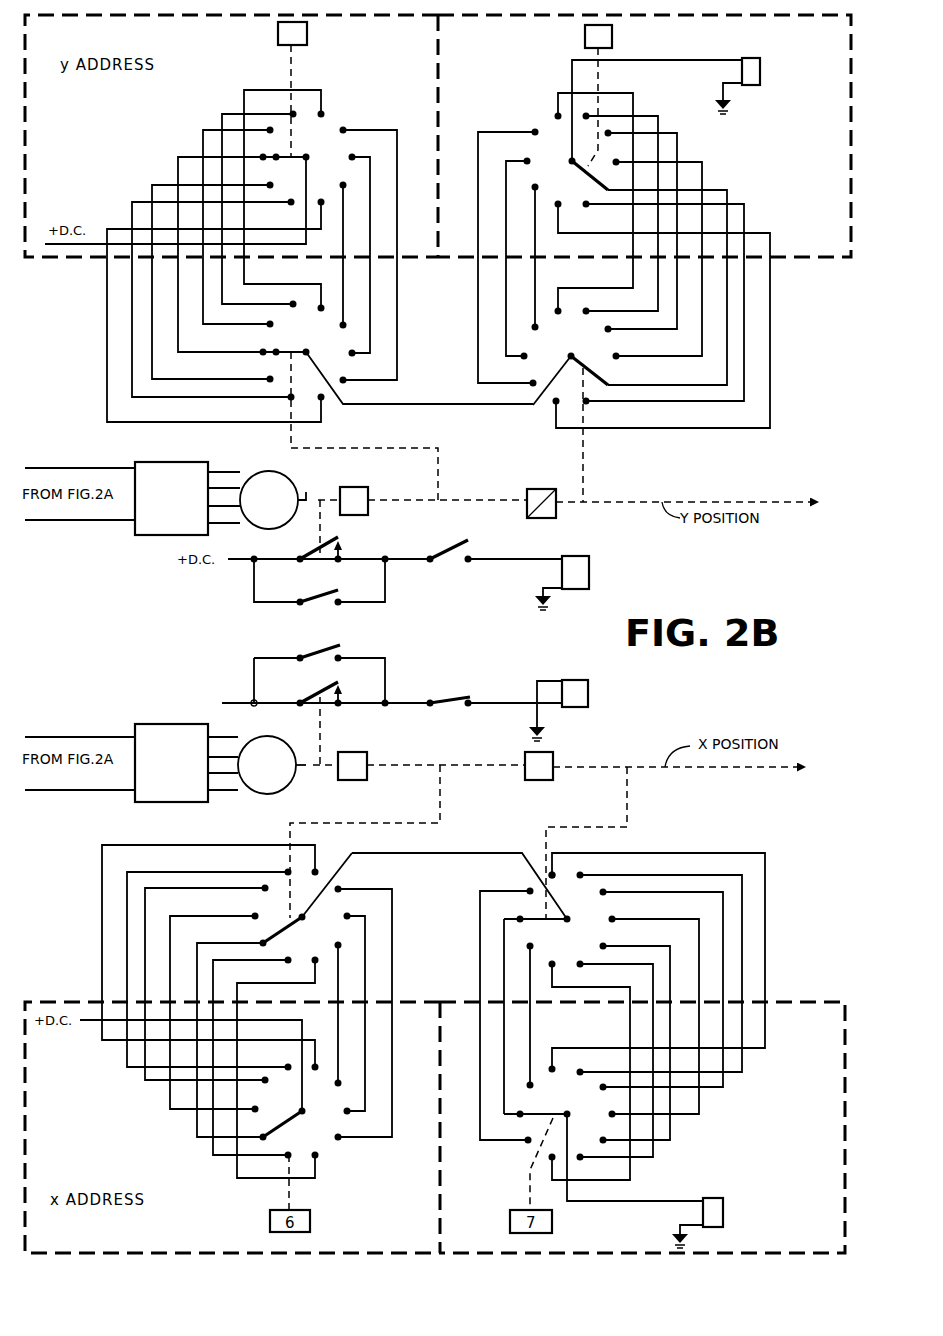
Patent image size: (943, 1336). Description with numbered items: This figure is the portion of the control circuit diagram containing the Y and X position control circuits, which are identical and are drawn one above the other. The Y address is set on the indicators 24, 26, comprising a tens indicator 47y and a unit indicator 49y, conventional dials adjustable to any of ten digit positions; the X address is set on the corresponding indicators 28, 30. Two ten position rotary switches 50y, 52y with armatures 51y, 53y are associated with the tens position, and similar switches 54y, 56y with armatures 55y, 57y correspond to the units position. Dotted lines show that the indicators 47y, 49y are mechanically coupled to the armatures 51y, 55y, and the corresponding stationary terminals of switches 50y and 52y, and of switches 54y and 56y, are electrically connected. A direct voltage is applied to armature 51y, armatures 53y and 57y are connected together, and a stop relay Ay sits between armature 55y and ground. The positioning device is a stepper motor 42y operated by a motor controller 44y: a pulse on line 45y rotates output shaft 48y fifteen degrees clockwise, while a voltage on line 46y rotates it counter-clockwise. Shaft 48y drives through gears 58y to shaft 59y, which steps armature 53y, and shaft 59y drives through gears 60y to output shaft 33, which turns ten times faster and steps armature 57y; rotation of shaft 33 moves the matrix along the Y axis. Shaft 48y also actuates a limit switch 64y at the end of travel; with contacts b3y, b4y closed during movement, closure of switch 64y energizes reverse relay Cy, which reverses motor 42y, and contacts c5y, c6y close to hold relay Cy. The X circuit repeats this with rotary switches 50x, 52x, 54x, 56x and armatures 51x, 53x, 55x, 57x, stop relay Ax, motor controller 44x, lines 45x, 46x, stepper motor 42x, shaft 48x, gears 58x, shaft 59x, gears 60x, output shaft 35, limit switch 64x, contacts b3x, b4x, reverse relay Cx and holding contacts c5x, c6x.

The tens indicator (Y address) 24 is at (46, 259).
The units indicator (Y address) 26 is at (801, 261).
The tens indicator (X address) 28 is at (72, 998).
The units indicator (X address) 30 is at (798, 1003).
The tens indicator dial 47y is at (307, 35).
The unit indicator dial 49y is at (612, 38).
The stop relay Ay is at (760, 83).
The stop relay Ax is at (723, 1225).
The ten position rotary switch 50y is at (323, 136).
The armature 51y is at (290, 160).
The ten position rotary switch 52y is at (289, 308).
The armature 53y is at (291, 351).
The ten position rotary switch 54y is at (556, 142).
The armature 55y is at (591, 172).
The ten position rotary switch 56y is at (576, 309).
The armature 57y is at (588, 353).
The motor controller 44y is at (178, 462).
The clockwise control lead 45y is at (50, 468).
The counter-clockwise control line 46y is at (55, 520).
The stepper motor 42y is at (286, 510).
The output shaft 48y is at (306, 492).
The gears 58y is at (365, 487).
The shaft 59y is at (455, 500).
The gears 60y is at (533, 489).
The output shaft 33 is at (693, 502).
The limit switch 64y is at (318, 550).
The relay contact b3y is at (452, 548).
The relay contact b4y is at (468, 563).
The relay contact c5y is at (321, 599).
The relay contact c6y is at (338, 604).
The reverse relay Cy is at (589, 572).
The relay contact c5x is at (319, 651).
The relay contact c6x is at (338, 656).
The limit switch 64x is at (318, 695).
The relay contact b3x is at (455, 690).
The relay contact b4x is at (468, 707).
The reverse relay Cx is at (588, 694).
The motor controller 44x is at (153, 723).
The clockwise control lead 45x is at (50, 737).
The counter-clockwise control line 46x is at (55, 790).
The stepper motor 42x is at (267, 765).
The output shaft 48x is at (306, 765).
The gears 58x is at (355, 752).
The shaft 59x is at (448, 765).
The gears 60x is at (560, 752).
The output shaft 35 is at (703, 767).
The ten position rotary switch 50x is at (322, 1146).
The armature 51x is at (284, 1128).
The ten position rotary switch 52x is at (270, 905).
The armature 53x is at (284, 942).
The ten position rotary switch 54x is at (569, 1062).
The armature 55x is at (557, 1114).
The ten position rotary switch 56x is at (592, 913).
The armature 57x is at (556, 922).